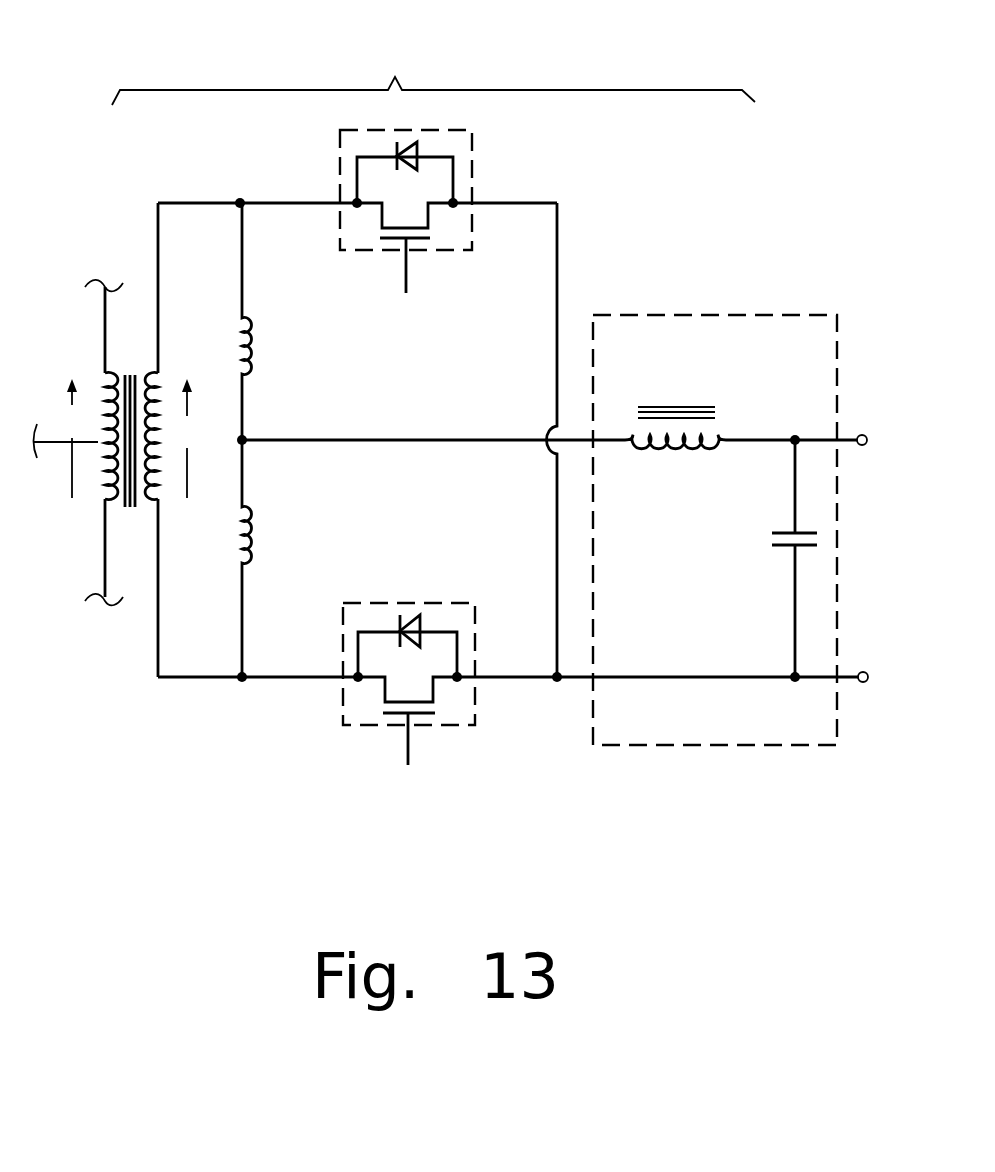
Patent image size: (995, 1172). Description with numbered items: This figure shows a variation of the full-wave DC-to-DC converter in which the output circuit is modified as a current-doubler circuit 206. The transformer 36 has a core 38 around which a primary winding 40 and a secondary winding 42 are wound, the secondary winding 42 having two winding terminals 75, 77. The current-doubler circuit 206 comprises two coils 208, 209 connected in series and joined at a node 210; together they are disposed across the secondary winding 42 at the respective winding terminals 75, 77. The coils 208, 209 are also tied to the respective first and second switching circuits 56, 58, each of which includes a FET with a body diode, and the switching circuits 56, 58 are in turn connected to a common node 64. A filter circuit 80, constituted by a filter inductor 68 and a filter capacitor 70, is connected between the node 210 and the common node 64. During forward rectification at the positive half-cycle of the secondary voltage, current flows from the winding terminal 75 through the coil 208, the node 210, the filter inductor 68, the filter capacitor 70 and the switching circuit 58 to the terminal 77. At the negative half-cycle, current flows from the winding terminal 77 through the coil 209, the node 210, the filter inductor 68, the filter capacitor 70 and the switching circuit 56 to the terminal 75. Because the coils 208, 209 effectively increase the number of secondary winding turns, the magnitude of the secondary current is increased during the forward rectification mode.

The current-doubler circuit 206 is at (433, 71).
The transformer 36 is at (122, 442).
The core 38 is at (134, 512).
The primary winding 40 is at (104, 500).
The secondary winding 42 is at (160, 502).
The winding terminal 75 is at (192, 203).
The winding terminal 77 is at (203, 680).
The first switching circuit 56 is at (484, 167).
The second switching circuit 58 is at (488, 696).
The coil 208 is at (247, 325).
The coil 209 is at (252, 529).
The node 210 is at (246, 444).
The common node 64 is at (556, 675).
The filter inductor 68 is at (683, 406).
The filter capacitor 70 is at (781, 547).
The filter circuit 80 is at (730, 497).